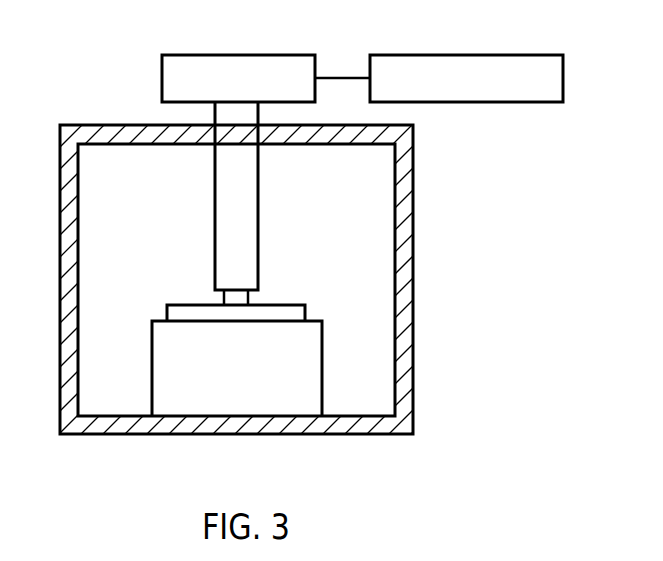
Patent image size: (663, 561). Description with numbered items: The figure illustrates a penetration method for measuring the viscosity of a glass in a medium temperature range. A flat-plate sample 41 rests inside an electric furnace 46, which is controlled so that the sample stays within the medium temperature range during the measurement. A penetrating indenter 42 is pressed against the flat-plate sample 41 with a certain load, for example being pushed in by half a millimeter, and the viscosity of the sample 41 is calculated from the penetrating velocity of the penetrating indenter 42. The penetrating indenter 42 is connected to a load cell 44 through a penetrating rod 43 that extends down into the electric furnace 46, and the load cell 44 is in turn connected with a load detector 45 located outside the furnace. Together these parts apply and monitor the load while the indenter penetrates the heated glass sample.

The flat-plate sample 41 is at (297, 312).
The penetrating indenter 42 is at (248, 298).
The penetrating rod 43 is at (222, 115).
The load cell 44 is at (226, 62).
The load detector 45 is at (443, 62).
The electric furnace 46 is at (405, 210).